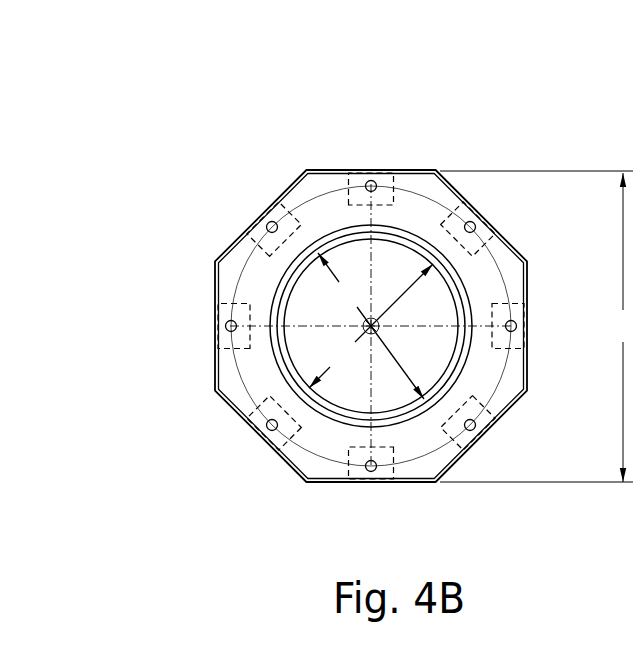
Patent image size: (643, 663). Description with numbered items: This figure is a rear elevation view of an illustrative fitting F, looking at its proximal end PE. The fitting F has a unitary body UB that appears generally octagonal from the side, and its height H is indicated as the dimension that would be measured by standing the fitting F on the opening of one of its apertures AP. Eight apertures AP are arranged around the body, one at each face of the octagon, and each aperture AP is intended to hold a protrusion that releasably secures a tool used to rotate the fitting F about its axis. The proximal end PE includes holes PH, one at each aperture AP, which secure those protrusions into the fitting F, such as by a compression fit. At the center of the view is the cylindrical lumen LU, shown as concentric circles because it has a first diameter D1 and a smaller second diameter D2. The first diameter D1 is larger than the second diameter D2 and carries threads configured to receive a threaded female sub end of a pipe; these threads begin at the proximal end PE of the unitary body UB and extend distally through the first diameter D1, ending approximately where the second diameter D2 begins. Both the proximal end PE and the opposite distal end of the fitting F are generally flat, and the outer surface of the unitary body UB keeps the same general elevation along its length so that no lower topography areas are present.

The fitting F is at (310, 95).
The unitary body UB is at (164, 310).
The proximal end PE is at (275, 503).
The cylindrical lumen LU is at (440, 352).
The holes PH is at (266, 225).
The apertures AP is at (393, 172).
The first diameter D1 is at (371, 326).
The second diameter D2 is at (371, 326).
The height H is at (540, 326).